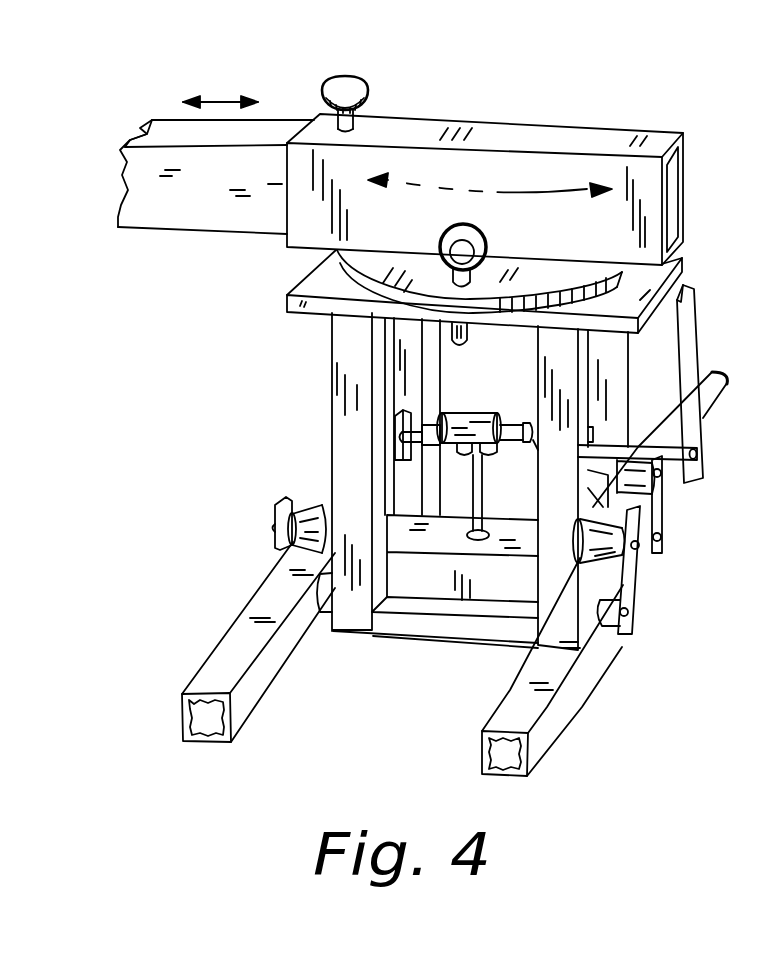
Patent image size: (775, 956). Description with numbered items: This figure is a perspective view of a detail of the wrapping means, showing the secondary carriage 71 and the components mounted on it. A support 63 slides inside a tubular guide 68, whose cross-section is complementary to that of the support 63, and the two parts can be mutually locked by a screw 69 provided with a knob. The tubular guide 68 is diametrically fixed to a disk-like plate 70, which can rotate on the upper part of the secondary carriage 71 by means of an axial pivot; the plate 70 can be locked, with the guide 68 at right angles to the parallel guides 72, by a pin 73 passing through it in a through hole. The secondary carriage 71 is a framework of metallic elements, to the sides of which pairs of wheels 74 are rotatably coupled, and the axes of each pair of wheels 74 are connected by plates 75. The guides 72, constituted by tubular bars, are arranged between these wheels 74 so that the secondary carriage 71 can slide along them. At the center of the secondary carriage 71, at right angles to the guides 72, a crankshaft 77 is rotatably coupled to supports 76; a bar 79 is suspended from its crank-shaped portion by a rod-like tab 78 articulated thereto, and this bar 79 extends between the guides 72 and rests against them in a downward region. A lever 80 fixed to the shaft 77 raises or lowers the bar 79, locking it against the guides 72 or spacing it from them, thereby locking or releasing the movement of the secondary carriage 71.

The support 63 is at (194, 217).
The tubular guide 68 is at (392, 127).
The screw 69 is at (353, 85).
The disk-like plate 70 is at (532, 278).
The secondary carriage 71 is at (323, 422).
The parallel guides 72 is at (242, 697).
The pin 73 is at (457, 277).
The pairs of wheels 74 is at (328, 611).
The plates 75 is at (283, 512).
The supports 76 is at (403, 455).
The crankshaft 77 is at (430, 422).
The rod-like tab 78 is at (477, 488).
The bar 79 is at (510, 595).
The lever 80 is at (692, 310).